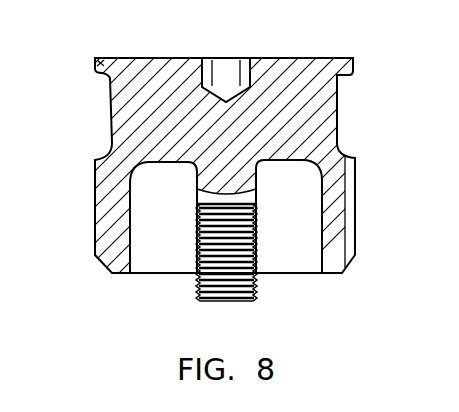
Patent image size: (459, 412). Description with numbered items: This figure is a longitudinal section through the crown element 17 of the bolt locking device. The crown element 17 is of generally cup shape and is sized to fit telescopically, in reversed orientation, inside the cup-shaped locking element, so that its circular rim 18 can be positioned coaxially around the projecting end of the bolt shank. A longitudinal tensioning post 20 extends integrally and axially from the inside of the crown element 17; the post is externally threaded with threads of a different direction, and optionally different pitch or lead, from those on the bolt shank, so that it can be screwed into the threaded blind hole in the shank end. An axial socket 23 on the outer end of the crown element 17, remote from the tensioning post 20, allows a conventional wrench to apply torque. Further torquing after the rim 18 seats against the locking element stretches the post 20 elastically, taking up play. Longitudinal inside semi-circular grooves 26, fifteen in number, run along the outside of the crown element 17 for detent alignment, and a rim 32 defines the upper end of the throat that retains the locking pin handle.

The crown element 17 is at (340, 117).
The circular rim 18 is at (115, 247).
The tensioning post 20 is at (256, 287).
The axial socket 23 is at (234, 74).
The inside semi-circular grooves 26 is at (348, 233).
The rim 32 is at (100, 63).